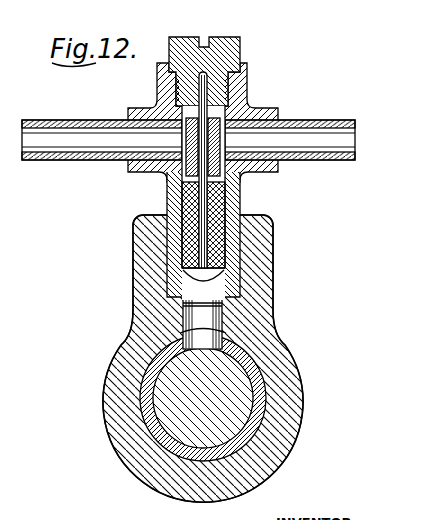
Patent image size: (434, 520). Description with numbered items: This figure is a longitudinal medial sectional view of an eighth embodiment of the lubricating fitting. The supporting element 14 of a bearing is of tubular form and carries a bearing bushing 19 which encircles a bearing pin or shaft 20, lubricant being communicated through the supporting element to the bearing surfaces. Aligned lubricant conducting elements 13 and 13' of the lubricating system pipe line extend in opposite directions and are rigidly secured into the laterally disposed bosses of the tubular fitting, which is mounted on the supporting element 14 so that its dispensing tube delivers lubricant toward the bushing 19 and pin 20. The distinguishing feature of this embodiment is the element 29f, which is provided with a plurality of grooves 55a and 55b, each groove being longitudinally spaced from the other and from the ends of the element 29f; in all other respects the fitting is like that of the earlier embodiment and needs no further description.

The lubricant conducting element 13 is at (102, 124).
The lubricant conducting element 13' is at (295, 124).
The supporting element 14 is at (123, 413).
The bearing bushing 19 is at (260, 393).
The bearing pin 20 is at (223, 388).
The element 29f is at (182, 230).
The groove 55a is at (222, 222).
The groove 55b is at (220, 250).